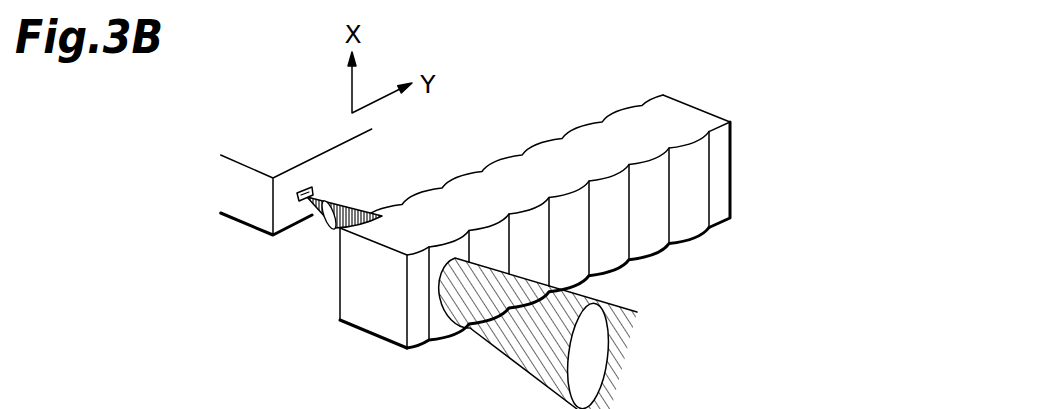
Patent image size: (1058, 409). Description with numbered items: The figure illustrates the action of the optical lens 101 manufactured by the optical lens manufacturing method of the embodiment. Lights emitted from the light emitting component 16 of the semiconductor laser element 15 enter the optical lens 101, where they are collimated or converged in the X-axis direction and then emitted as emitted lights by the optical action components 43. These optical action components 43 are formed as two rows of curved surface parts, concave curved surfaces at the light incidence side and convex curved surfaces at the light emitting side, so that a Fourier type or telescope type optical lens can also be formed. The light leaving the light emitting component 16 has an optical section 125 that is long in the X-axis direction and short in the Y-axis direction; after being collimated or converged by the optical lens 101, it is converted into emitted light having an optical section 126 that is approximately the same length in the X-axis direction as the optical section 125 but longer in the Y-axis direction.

The semiconductor laser element 15 is at (256, 217).
The light emitting component 16 is at (303, 180).
The optical action component 43 is at (588, 133).
The optical lens 101 is at (571, 180).
The optical section 125 is at (333, 200).
The optical section 126 is at (603, 357).